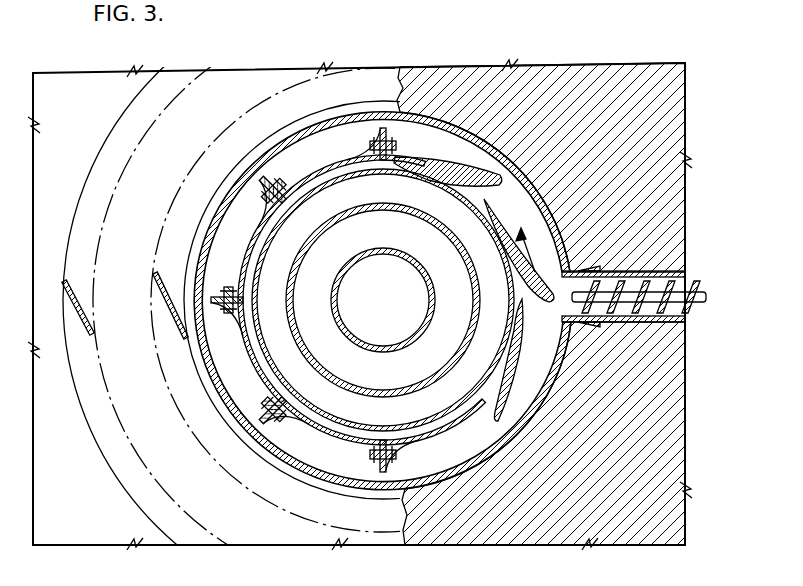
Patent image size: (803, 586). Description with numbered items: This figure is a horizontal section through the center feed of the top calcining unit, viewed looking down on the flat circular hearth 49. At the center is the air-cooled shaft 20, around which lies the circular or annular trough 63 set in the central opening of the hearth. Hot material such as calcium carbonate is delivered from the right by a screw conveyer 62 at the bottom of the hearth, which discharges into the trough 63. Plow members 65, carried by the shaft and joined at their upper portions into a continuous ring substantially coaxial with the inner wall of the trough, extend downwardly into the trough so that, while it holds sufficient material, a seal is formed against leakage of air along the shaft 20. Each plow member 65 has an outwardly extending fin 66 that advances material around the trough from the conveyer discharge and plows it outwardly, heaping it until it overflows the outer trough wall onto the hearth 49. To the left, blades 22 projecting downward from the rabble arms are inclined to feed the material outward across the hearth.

The central air-cooled shaft 20 is at (460, 342).
The blades 22 is at (165, 300).
The flat circular hearth 49 is at (614, 71).
The screw conveyer 62 is at (628, 307).
The annular trough 63 is at (484, 192).
The plow members 65 is at (257, 245).
The fin 66 is at (262, 203).